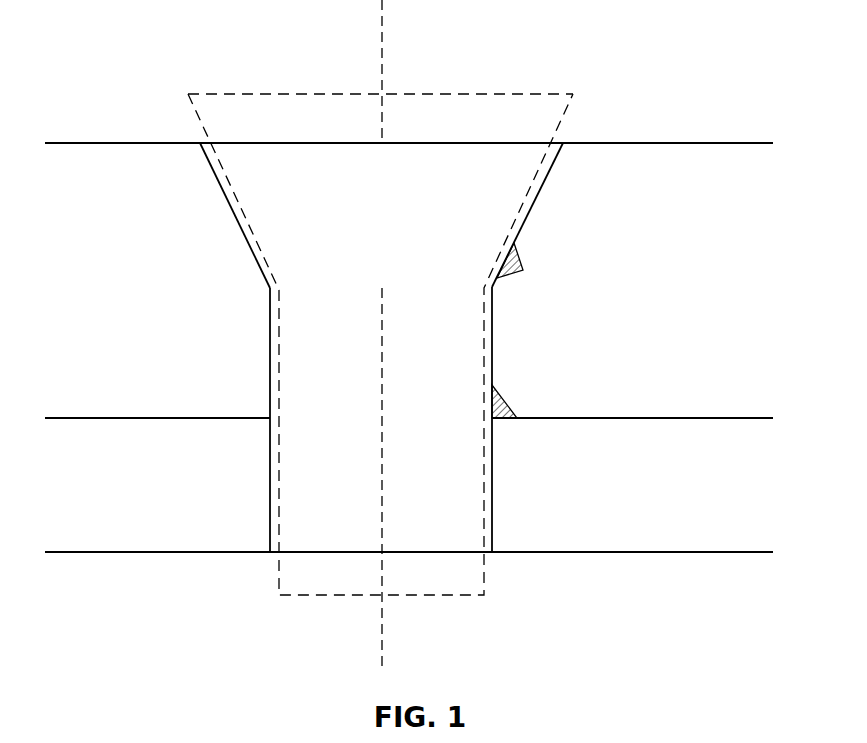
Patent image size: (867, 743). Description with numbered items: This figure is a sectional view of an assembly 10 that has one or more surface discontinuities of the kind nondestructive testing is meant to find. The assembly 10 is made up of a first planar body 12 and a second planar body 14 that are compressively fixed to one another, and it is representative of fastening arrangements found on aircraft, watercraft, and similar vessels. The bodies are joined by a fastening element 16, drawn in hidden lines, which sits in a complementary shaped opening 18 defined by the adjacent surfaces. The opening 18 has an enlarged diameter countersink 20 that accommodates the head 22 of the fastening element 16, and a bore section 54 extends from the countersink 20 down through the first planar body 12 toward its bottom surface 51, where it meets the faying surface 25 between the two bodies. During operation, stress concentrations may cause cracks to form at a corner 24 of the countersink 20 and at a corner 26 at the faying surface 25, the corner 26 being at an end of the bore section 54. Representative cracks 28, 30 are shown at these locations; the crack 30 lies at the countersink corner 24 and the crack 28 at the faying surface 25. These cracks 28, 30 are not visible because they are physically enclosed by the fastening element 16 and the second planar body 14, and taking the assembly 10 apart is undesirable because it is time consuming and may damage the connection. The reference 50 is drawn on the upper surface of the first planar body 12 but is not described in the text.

The assembly 10 is at (614, 120).
The first planar body 12 is at (640, 407).
The second planar body 14 is at (642, 527).
The fastening element 16 is at (380, 308).
The opening 18 is at (290, 335).
The countersink 20 is at (222, 190).
The head 22 is at (522, 92).
The corner of the countersink 24 is at (492, 287).
The faying surface 25 is at (493, 418).
The corner at the faying surface 26 is at (490, 418).
The crack 28 is at (505, 403).
The crack 30 is at (523, 262).
The top surface 50 is at (668, 145).
The bottom surface 51 is at (600, 419).
The bore section 54 is at (494, 322).